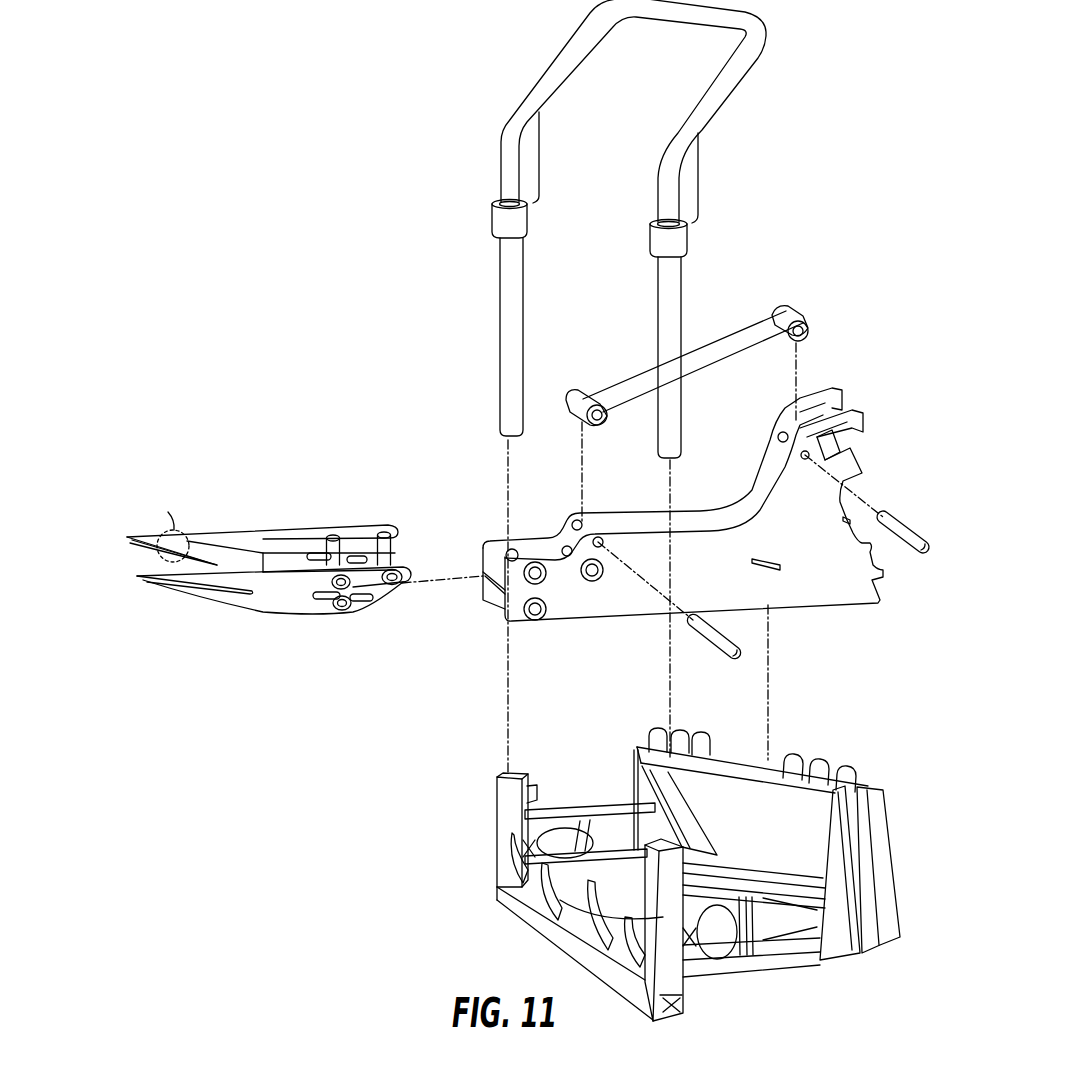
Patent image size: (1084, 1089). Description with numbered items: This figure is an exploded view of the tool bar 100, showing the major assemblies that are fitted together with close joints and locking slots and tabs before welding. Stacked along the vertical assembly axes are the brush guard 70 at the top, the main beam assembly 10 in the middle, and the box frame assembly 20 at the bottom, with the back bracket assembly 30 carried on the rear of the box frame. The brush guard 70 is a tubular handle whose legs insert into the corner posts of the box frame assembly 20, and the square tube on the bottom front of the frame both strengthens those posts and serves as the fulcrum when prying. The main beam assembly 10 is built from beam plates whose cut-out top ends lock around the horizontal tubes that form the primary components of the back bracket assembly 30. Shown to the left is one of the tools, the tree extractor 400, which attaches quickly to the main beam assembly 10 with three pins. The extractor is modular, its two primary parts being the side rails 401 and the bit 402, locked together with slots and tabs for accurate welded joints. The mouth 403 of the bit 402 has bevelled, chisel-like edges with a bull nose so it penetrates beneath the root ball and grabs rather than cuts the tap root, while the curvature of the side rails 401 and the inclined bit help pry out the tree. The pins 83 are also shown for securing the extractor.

The tool bar 100 is at (416, 163).
The brush guard 70 is at (737, 122).
The main beam assembly 10 is at (712, 487).
The box frame assembly 20 is at (764, 1006).
The back bracket assembly 30 is at (816, 744).
The tree extractor 400 is at (235, 550).
The side rails 401 is at (265, 597).
The bit 402 is at (232, 556).
The mouth 403 is at (148, 556).
The pins 83 is at (392, 584).